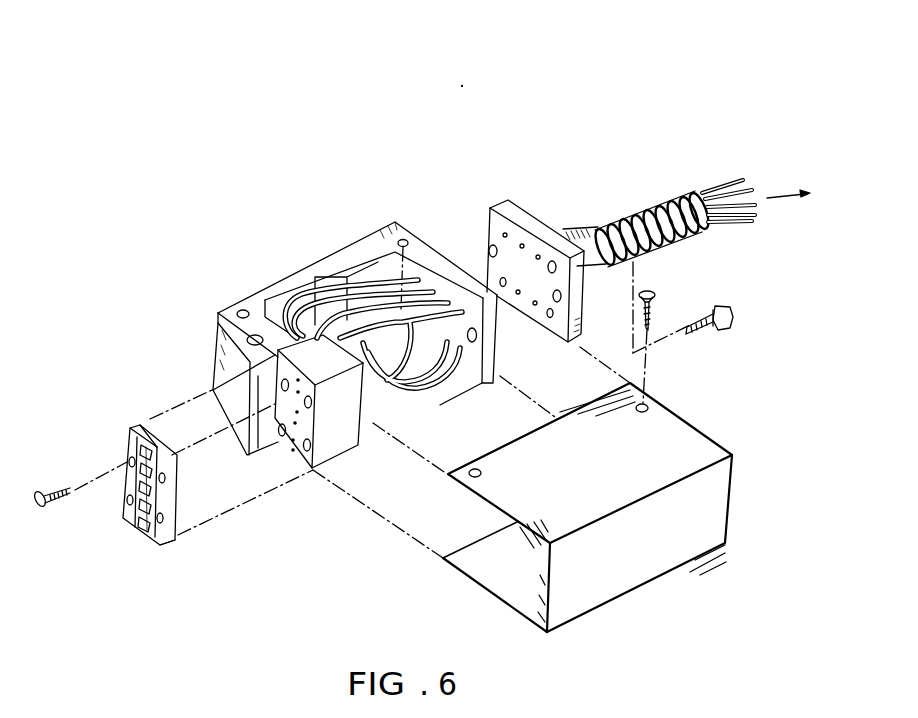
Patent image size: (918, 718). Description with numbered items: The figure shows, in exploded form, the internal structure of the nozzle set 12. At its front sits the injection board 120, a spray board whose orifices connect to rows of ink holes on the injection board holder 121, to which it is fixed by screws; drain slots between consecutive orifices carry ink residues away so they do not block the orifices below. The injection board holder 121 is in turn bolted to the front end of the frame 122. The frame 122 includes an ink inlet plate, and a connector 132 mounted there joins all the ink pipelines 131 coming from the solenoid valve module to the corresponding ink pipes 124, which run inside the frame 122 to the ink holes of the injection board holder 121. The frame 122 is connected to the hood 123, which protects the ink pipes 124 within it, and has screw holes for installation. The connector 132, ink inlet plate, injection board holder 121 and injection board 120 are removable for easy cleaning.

The nozzle set 12 is at (458, 90).
The injection board 120 is at (130, 458).
The injection board holder 121 is at (330, 445).
The frame 122 is at (325, 262).
The hood 123 is at (607, 590).
The ink pipes 124 is at (388, 407).
The ink pipelines 131 is at (735, 178).
The connector 132 is at (568, 342).